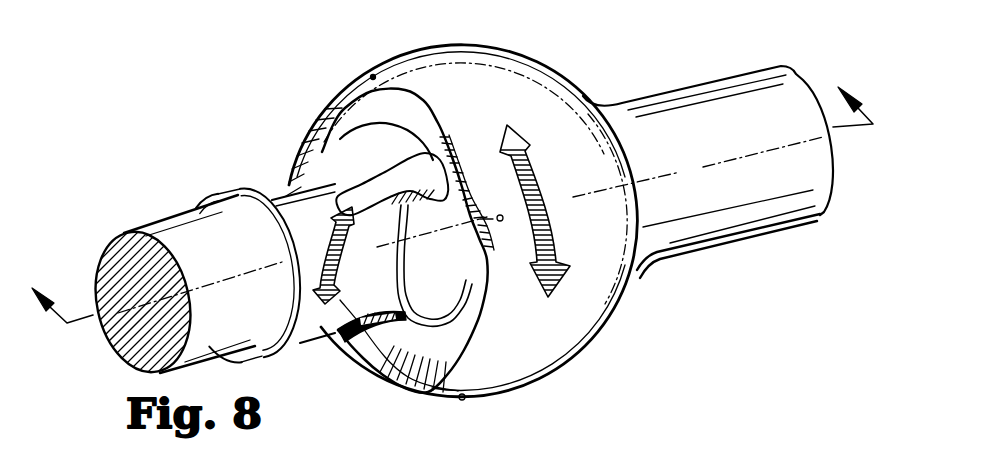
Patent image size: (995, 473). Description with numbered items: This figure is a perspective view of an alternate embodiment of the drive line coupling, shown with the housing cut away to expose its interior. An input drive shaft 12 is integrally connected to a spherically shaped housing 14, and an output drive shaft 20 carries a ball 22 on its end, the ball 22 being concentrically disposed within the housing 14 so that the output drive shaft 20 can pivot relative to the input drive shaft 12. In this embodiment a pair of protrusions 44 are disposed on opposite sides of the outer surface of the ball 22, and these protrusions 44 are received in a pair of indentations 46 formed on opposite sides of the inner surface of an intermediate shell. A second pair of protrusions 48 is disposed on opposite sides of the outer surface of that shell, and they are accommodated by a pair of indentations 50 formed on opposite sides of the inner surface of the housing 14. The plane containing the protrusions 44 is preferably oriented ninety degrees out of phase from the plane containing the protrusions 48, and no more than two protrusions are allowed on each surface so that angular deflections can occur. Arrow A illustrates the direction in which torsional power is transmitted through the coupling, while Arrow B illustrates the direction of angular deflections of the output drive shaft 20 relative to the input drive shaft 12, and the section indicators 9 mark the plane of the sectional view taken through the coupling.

The input drive shaft 12 is at (707, 93).
The housing 14 is at (560, 76).
The output drive shaft 20 is at (173, 223).
The ball 22 is at (414, 320).
The protrusions 44 is at (412, 167).
The indentations 46 is at (468, 240).
The protrusions 48 is at (312, 133).
The indentations 50 is at (302, 155).
The section line 9 is at (459, 220).
The Arrow A is at (550, 238).
The Arrow B is at (338, 270).